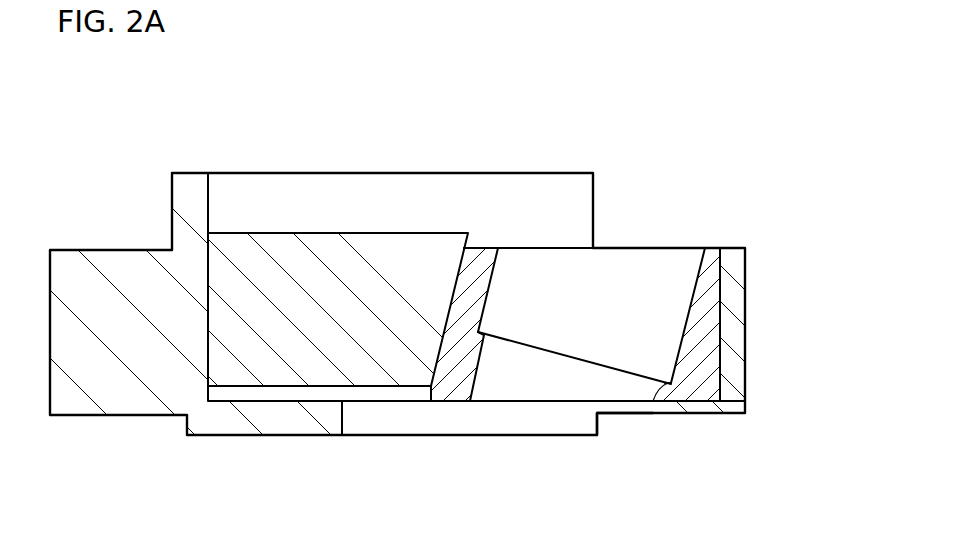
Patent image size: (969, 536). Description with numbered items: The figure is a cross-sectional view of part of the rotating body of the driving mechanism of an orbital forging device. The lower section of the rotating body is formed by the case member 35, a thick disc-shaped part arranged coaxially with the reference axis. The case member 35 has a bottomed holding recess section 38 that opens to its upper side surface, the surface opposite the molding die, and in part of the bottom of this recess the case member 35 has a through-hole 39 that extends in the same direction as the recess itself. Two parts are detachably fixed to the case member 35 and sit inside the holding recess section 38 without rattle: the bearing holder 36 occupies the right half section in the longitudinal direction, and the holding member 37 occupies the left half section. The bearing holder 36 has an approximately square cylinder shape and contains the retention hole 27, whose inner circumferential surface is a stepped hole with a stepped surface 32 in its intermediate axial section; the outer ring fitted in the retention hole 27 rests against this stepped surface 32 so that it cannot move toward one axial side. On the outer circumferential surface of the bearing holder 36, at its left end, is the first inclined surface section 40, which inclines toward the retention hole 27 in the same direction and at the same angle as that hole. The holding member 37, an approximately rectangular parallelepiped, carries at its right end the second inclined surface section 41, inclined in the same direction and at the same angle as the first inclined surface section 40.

The case member 35 is at (103, 300).
The holding member 37 is at (300, 293).
The first inclined surface section 40 is at (447, 290).
The second inclined surface section 41 is at (445, 323).
The retention hole 27 is at (490, 305).
The holding recess section 38 is at (697, 262).
The bearing holder 36 is at (705, 312).
The stepped surface 32 is at (665, 382).
The through-hole 39 is at (655, 402).